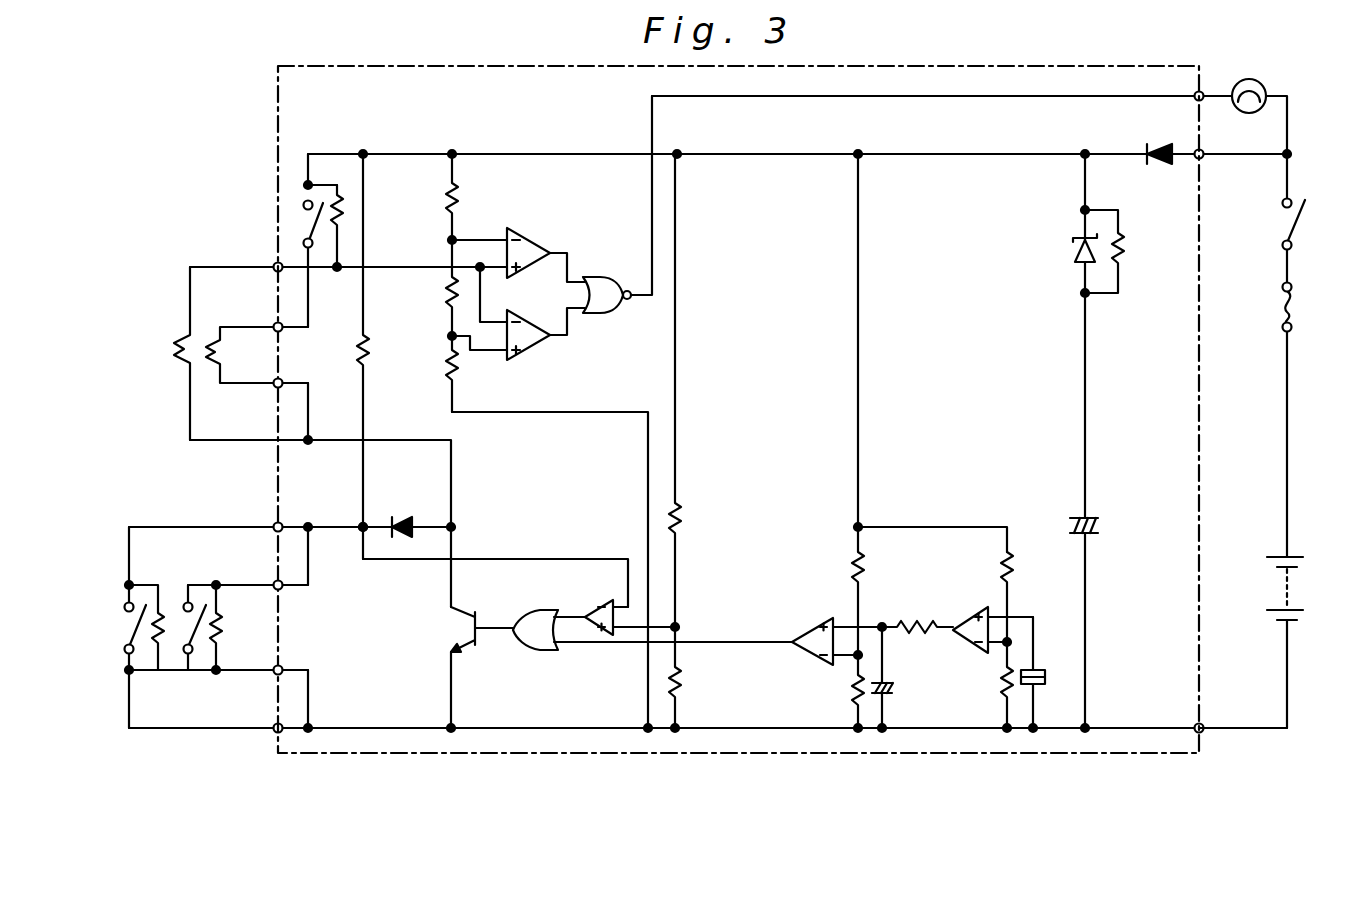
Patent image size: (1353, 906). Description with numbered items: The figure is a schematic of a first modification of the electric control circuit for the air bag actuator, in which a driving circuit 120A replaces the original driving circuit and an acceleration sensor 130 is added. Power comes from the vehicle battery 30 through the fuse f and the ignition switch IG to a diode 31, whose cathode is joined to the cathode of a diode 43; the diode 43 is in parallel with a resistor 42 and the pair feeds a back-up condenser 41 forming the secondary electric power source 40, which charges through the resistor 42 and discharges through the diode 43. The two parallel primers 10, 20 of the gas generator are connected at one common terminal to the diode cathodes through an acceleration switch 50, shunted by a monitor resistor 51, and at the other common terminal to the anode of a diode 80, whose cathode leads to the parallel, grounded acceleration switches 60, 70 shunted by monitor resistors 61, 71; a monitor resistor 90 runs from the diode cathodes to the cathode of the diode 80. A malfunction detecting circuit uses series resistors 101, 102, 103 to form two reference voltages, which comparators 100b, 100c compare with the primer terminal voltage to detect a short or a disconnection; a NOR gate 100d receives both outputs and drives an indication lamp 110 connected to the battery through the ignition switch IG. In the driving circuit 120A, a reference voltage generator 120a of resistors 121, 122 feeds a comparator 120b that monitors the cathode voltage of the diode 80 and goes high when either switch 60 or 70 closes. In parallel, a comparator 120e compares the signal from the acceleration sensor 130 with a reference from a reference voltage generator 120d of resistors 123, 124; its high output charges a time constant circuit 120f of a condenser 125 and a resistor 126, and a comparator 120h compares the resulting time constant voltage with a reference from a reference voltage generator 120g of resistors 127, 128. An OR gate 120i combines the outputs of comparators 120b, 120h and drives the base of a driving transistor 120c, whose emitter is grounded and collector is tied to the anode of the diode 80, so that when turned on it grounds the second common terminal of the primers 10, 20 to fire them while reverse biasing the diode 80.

The primer 10 is at (175, 356).
The primer 20 is at (218, 360).
The vehicle battery 30 is at (1278, 596).
The diode 31 is at (1158, 145).
The secondary electric power source 40 is at (1104, 550).
The back-up condenser 41 is at (1100, 518).
The resistor 42 is at (1126, 250).
The diode 43 is at (1078, 250).
The acceleration switch 50 is at (305, 226).
The monitor resistor 51 is at (345, 219).
The acceleration switch 60 is at (134, 623).
The monitor resistor 61 is at (165, 612).
The acceleration switch 70 is at (180, 645).
The monitor resistor 71 is at (222, 630).
The diode 80 is at (410, 517).
The monitor resistor 90 is at (362, 351).
The comparator 100b is at (532, 350).
The comparator 100c is at (524, 238).
The NOR gate 100d is at (607, 280).
The resistor 101 is at (452, 372).
The resistor 102 is at (452, 300).
The resistor 103 is at (459, 205).
The indication lamp 110 is at (1257, 85).
The driving circuit 120A is at (575, 757).
The reference voltage generator 120a is at (711, 479).
The comparator 120b is at (594, 606).
The driving transistor 120c is at (470, 628).
The reference voltage generator 120d is at (1013, 678).
The comparator 120e is at (962, 624).
The time constant circuit 120f is at (883, 622).
The reference voltage generator 120g is at (844, 479).
The comparator 120h is at (814, 632).
The OR gate 120i is at (527, 651).
The resistor 121 is at (683, 690).
The resistor 122 is at (683, 518).
The resistor 123 is at (1002, 676).
The resistor 124 is at (1014, 568).
The condenser 125 is at (895, 686).
The resistor 126 is at (912, 633).
The resistor 127 is at (851, 695).
The resistor 128 is at (851, 568).
The acceleration sensor 130 is at (1038, 676).
The ignition switch IG is at (1290, 222).
The fuse f is at (1282, 308).